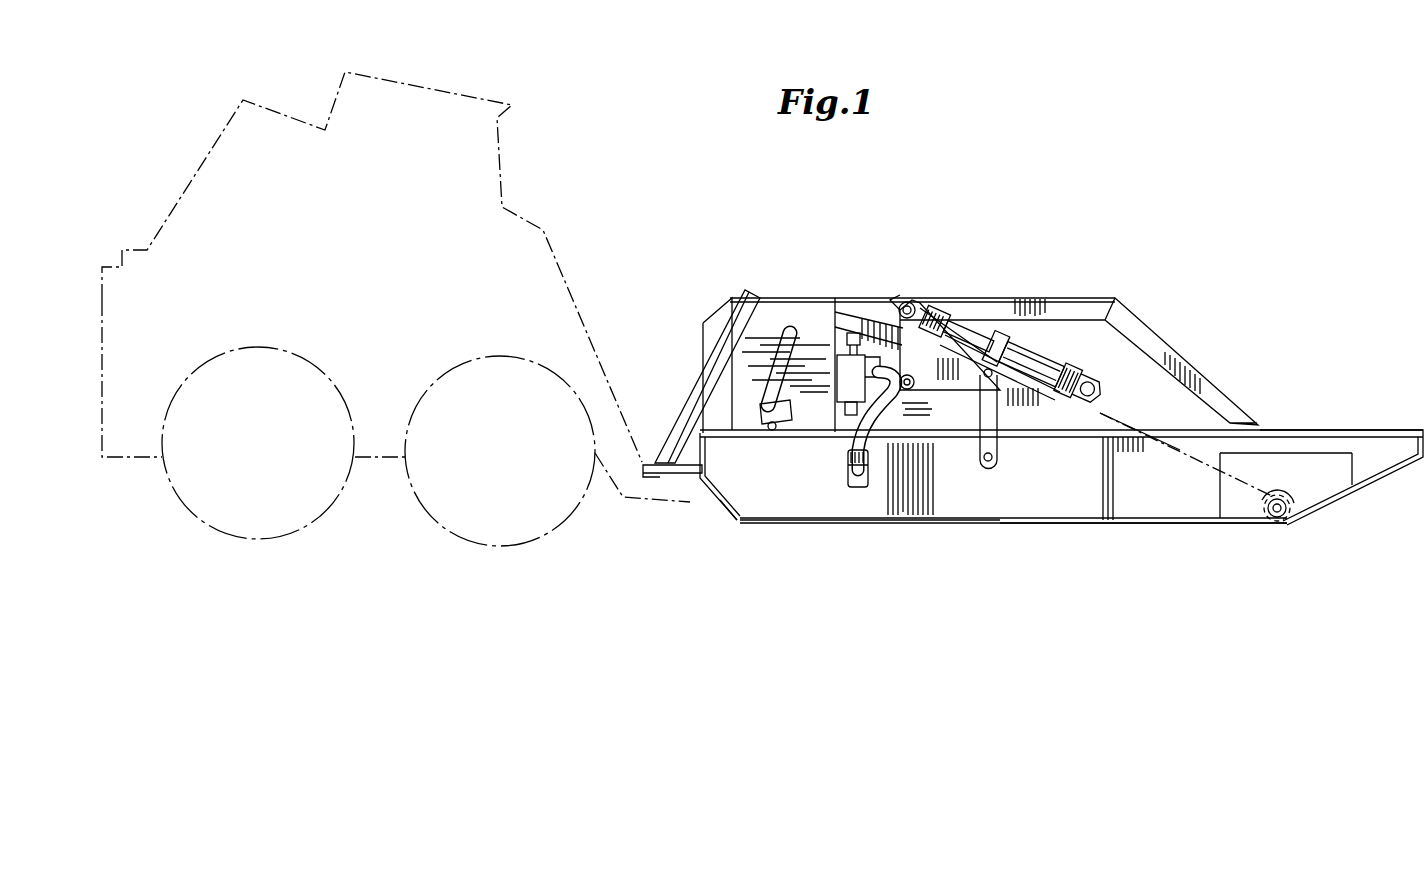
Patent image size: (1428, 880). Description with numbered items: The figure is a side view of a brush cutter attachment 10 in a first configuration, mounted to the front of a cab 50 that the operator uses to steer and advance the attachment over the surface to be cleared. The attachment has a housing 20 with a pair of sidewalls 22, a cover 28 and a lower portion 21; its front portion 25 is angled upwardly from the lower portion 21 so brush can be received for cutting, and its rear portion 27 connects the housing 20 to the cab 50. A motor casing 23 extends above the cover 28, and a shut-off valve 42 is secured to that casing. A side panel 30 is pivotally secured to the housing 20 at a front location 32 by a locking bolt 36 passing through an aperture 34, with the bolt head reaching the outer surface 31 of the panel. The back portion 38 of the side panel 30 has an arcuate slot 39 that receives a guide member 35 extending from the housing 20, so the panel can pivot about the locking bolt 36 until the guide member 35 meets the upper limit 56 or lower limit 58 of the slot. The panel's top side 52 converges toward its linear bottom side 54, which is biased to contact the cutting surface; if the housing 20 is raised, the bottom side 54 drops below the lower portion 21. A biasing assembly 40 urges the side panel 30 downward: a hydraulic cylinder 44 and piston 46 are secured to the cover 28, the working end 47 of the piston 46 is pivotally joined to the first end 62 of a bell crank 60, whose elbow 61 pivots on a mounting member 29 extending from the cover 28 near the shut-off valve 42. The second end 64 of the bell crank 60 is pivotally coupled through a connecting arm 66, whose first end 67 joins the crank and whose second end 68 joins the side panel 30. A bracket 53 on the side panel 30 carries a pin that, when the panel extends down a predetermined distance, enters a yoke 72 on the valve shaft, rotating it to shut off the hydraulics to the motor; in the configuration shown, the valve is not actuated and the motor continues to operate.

The cab 50 is at (263, 93).
The brush cutter attachment 10 is at (1145, 307).
The housing 20 is at (1315, 430).
The lower portion 21 is at (1198, 524).
The sidewalls 22 is at (1385, 440).
The motor casing 23 is at (760, 320).
The front portion 25 is at (1348, 495).
The rear portion 27 is at (705, 490).
The cover 28 is at (1278, 430).
The mounting member 29 is at (933, 408).
The side panel 30 is at (927, 480).
The outer surface 31 is at (779, 465).
The front location 32 is at (1258, 510).
The aperture 34 is at (1277, 520).
The guide member 35 is at (717, 390).
The locking bolt 36 is at (1292, 503).
The back portion 38 is at (708, 410).
The arcuate slot 39 is at (817, 330).
The biasing assembly 40 is at (1033, 360).
The shut-off valve 42 is at (893, 300).
The cylinder 44 is at (1047, 323).
The piston 46 is at (973, 322).
The working end 47 is at (950, 318).
The top side 52 is at (878, 340).
The bracket 53 is at (847, 455).
The bottom side 54 is at (1085, 524).
The upper limit 56 is at (800, 317).
The lower limit 58 is at (733, 508).
The bell crank 60 is at (908, 390).
The elbow 61 is at (884, 400).
The first end 62 is at (909, 301).
The second end 64 is at (975, 372).
The connecting arm 66 is at (1005, 385).
The first end 67 is at (1162, 385).
The second end 68 is at (992, 462).
The yoke 72 is at (872, 385).